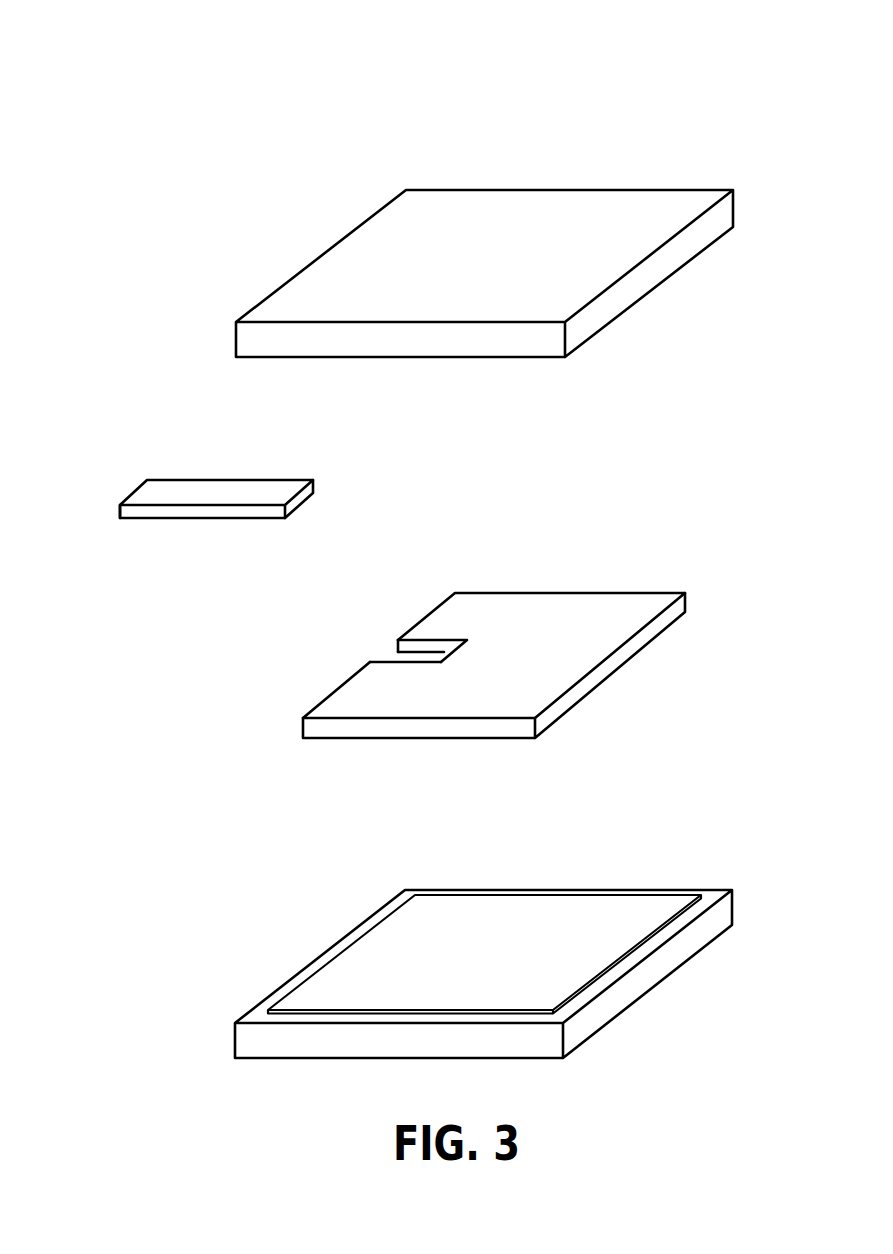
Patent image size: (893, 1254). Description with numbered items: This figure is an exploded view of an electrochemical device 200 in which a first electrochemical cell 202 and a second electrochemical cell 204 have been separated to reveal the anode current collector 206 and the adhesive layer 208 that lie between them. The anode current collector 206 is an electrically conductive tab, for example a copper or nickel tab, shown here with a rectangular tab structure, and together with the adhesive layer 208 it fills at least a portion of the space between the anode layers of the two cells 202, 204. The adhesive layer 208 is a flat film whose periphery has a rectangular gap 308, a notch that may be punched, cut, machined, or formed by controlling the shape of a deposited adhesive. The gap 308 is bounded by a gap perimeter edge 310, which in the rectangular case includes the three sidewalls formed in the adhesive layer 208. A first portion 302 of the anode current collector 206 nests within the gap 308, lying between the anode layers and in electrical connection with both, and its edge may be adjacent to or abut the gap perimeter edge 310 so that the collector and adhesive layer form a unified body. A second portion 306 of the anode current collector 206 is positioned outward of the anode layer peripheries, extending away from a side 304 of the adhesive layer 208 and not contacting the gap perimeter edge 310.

The device assembly 200 is at (294, 86).
The first electrochemical cell 202 is at (502, 229).
The second electrochemical cell 204 is at (653, 970).
The anode current collector 206 is at (197, 492).
The adhesive layer 208 is at (568, 660).
The first portion 302 is at (297, 500).
The side 304 is at (640, 592).
The second portion 306 is at (130, 496).
The gap 308 is at (400, 657).
The gap perimeter edge 310 is at (428, 648).